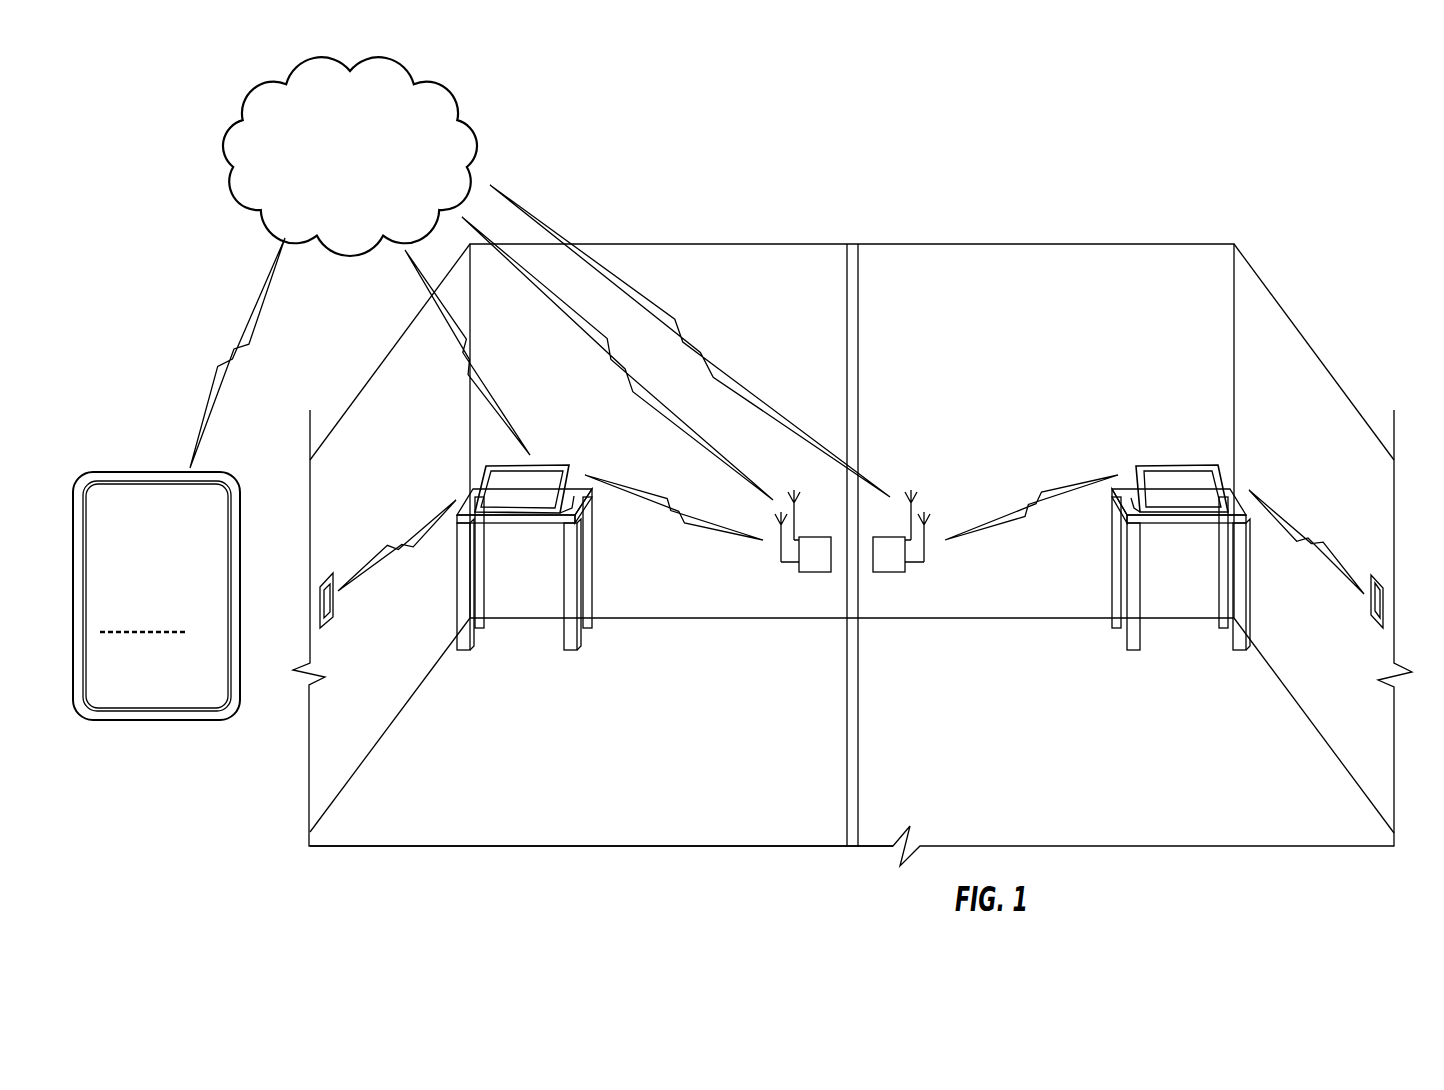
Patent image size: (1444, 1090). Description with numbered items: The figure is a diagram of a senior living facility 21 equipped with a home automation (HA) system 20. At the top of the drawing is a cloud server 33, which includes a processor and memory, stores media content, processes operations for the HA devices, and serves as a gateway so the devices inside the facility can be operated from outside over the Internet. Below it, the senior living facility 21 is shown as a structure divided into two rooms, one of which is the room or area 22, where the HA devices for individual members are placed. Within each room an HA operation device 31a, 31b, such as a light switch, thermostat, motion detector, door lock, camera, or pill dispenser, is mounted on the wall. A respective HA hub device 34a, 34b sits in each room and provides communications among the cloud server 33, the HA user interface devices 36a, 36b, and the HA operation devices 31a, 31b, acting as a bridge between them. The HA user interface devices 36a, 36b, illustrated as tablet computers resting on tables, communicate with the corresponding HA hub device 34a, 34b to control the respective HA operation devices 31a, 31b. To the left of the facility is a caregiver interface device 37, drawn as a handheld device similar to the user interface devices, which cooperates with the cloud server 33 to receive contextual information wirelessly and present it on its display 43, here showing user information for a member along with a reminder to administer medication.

The home automation system 20 is at (686, 172).
The senior living facility 21 is at (1125, 168).
The room or area 22 is at (547, 758).
The HA operation device 31a is at (320, 600).
The HA operation device 31b is at (1383, 603).
The cloud server 33 is at (258, 220).
The HA hub device 34a is at (809, 562).
The HA hub device 34b is at (896, 562).
The HA user interface device 36a is at (485, 475).
The HA user interface device 36b is at (1192, 480).
The caregiver interface device 37 is at (160, 470).
The display 43 is at (208, 740).